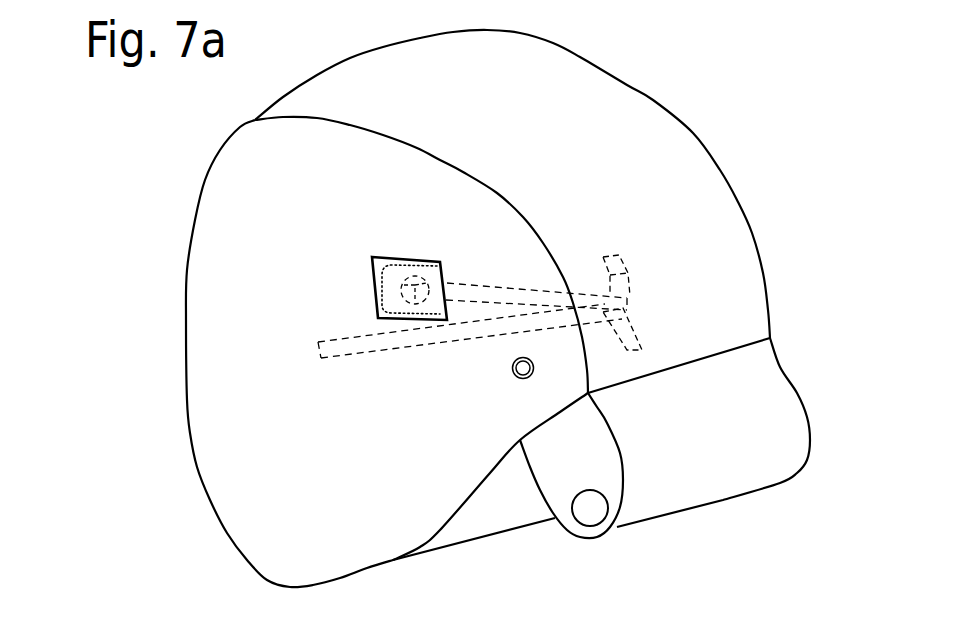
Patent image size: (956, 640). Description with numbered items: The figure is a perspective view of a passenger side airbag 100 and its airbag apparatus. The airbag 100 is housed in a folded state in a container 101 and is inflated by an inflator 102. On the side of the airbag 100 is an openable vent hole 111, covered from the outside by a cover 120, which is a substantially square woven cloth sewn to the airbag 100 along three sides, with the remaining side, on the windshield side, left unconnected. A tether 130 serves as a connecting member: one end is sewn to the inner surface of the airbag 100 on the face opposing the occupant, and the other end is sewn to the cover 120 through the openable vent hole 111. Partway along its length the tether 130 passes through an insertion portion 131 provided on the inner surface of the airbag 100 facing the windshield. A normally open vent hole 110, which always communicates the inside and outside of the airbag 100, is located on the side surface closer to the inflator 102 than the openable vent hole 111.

The passenger side airbag 100 is at (640, 113).
The container 101 is at (703, 487).
The inflator 102 is at (590, 510).
The normally open vent hole 110 is at (513, 377).
The openable vent hole 111 is at (403, 265).
The cover 120 is at (372, 275).
The tether 130 is at (418, 345).
The insertion portion 131 is at (627, 283).